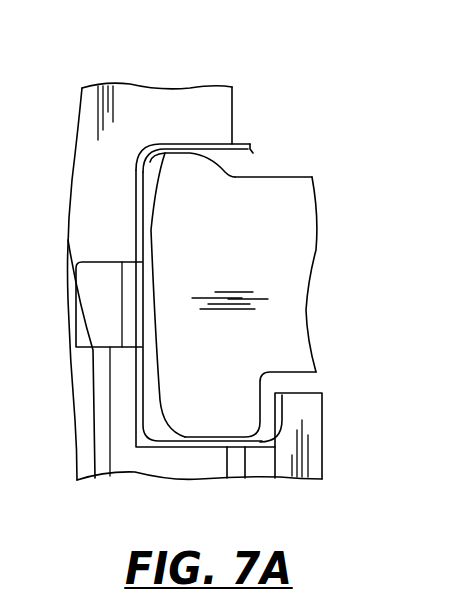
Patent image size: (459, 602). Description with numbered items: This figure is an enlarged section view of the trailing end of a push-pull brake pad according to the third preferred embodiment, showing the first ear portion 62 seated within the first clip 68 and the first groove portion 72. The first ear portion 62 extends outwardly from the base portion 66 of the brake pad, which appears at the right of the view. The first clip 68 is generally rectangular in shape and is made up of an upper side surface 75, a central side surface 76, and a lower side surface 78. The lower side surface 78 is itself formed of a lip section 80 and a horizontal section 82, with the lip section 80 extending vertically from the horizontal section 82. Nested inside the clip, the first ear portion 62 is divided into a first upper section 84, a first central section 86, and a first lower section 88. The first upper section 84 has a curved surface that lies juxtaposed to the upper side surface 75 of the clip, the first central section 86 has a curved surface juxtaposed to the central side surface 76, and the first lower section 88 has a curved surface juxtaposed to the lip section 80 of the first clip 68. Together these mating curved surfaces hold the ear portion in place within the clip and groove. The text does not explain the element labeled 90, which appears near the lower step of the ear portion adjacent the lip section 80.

The first ear portion 62 is at (227, 193).
The base portion 66 is at (312, 192).
The first clip 68 is at (250, 146).
The first groove portion 72 is at (143, 445).
The upper side surface 75 is at (185, 145).
The central side surface 76 is at (132, 330).
The lower side surface 78 is at (208, 447).
The lip section 80 is at (281, 400).
The horizontal section 82 is at (237, 447).
The first upper section 84 is at (197, 162).
The first central section 86 is at (172, 278).
The first lower section 88 is at (202, 420).
The step 90 is at (262, 393).